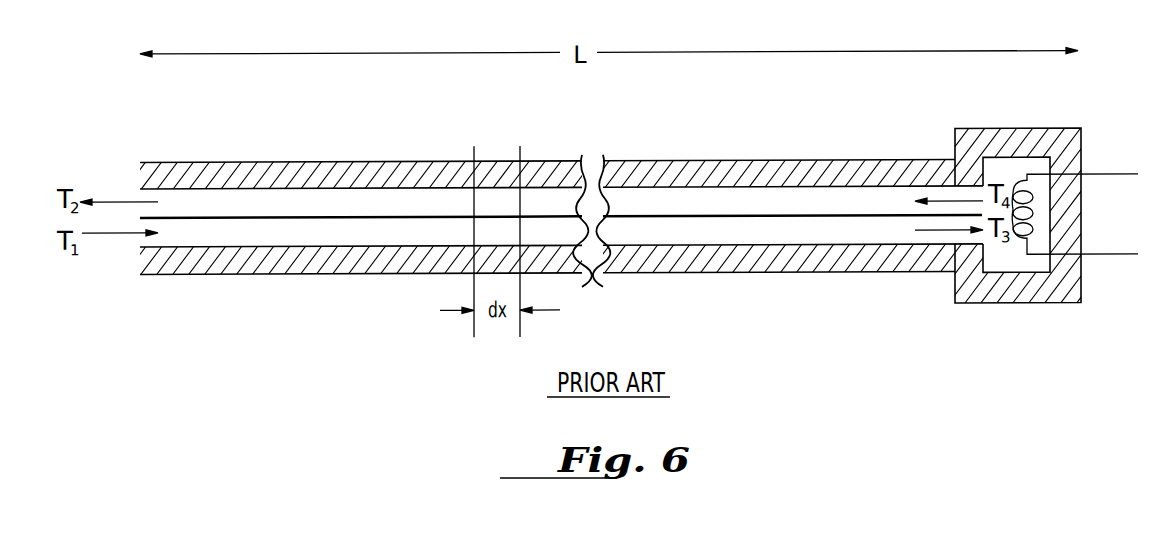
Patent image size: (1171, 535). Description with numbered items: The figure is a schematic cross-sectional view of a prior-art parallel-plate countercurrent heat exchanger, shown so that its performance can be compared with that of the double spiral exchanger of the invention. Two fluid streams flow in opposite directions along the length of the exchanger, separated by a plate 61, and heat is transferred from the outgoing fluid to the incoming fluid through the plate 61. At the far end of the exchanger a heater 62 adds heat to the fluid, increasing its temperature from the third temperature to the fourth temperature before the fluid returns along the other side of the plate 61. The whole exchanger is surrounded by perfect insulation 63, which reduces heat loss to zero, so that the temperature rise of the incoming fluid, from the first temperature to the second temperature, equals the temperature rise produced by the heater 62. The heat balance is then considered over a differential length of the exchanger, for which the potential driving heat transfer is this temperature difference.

The plate 61 is at (655, 218).
The heater 62 is at (1107, 177).
The perfect insulation 63 is at (1015, 152).